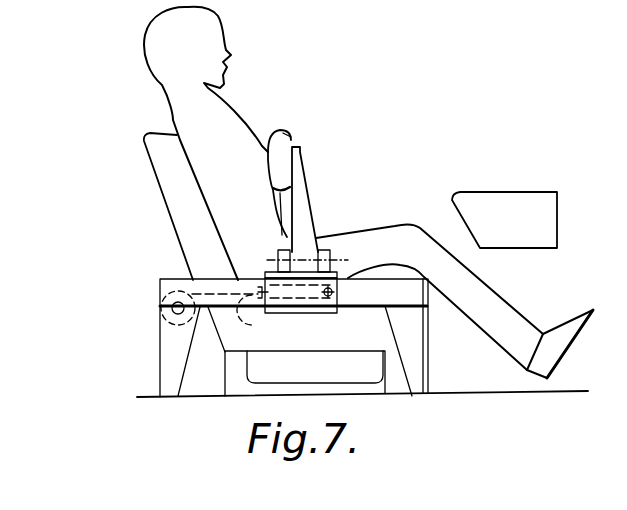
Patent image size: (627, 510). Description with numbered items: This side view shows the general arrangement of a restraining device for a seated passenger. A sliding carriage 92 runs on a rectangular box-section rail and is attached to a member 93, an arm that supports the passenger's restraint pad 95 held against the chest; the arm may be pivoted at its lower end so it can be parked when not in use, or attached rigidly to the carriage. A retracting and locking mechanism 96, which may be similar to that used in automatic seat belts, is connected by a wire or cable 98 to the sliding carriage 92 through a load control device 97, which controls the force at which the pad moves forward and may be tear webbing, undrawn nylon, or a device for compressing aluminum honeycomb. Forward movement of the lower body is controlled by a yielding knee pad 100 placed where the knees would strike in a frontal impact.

The sliding carriage 92 is at (320, 316).
The member 93 is at (298, 192).
The passenger's restraint pad 95 is at (291, 137).
The retracting and locking mechanism 96 is at (160, 318).
The load control device 97 is at (340, 289).
The wire or cable 98 is at (255, 323).
The knee pad 100 is at (523, 230).